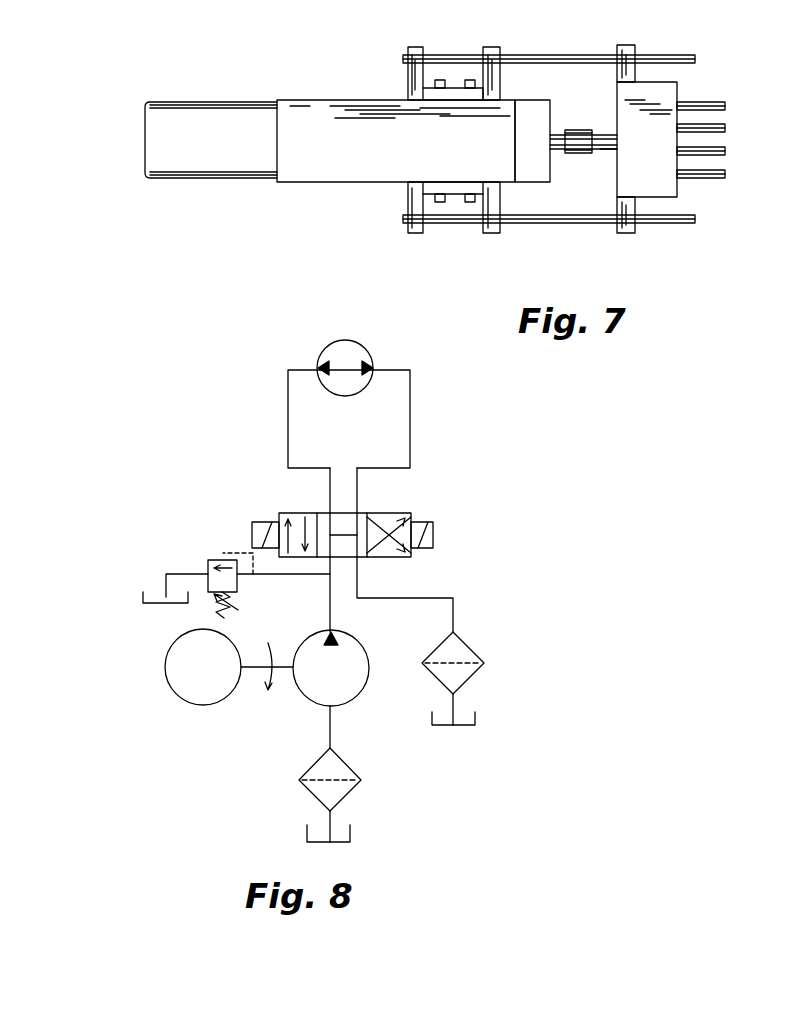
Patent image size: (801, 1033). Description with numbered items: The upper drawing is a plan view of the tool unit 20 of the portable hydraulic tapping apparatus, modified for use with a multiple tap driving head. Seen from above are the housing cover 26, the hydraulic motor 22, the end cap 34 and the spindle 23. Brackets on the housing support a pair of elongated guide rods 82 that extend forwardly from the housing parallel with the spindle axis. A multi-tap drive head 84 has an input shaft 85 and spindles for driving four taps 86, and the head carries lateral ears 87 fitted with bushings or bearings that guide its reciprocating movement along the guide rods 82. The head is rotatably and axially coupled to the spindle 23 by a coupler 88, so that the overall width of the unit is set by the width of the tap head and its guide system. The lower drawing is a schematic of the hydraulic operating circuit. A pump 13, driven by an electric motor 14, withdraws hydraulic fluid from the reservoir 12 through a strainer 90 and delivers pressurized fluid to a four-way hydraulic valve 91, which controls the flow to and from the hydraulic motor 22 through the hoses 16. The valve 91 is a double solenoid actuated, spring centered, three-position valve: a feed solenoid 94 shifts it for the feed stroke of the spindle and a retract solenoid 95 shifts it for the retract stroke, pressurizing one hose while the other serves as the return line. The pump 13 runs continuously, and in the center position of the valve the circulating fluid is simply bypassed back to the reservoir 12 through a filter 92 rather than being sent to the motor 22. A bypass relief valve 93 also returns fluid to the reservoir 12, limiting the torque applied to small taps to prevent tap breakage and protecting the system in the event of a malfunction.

In FIG. 8, the reservoir 12 is at (150, 598).
In FIG. 8, the pump 13 is at (306, 700).
In FIG. 8, the electric drive motor 14 is at (165, 667).
In FIG. 8, the hydraulic hoses 16 is at (288, 410).
In FIG. 7, the tool unit 20 is at (275, 185).
In FIG. 7, the hydraulic motor 22 is at (212, 118).
In FIG. 8, the hydraulic motor 22 is at (370, 350).
In FIG. 7, the spindle 23 is at (555, 148).
In FIG. 7, the housing cover 26 is at (290, 112).
In FIG. 7, the end cap 34 is at (540, 108).
In FIG. 7, the guide rods 82 is at (545, 57).
In FIG. 7, the multi-tap drive head 84 is at (665, 166).
In FIG. 7, the input shaft 85 is at (606, 152).
In FIG. 7, the taps 86 is at (710, 104).
In FIG. 7, the lateral ears 87 is at (415, 52).
In FIG. 7, the coupler 88 is at (578, 136).
In FIG. 8, the strainer 90 is at (345, 765).
In FIG. 8, the four-way hydraulic valve 91 is at (401, 503).
In FIG. 8, the filter 92 is at (472, 657).
In FIG. 8, the bypass relief valve 93 is at (210, 564).
In FIG. 8, the feed solenoid 94 is at (255, 540).
In FIG. 8, the retract solenoid 95 is at (433, 538).